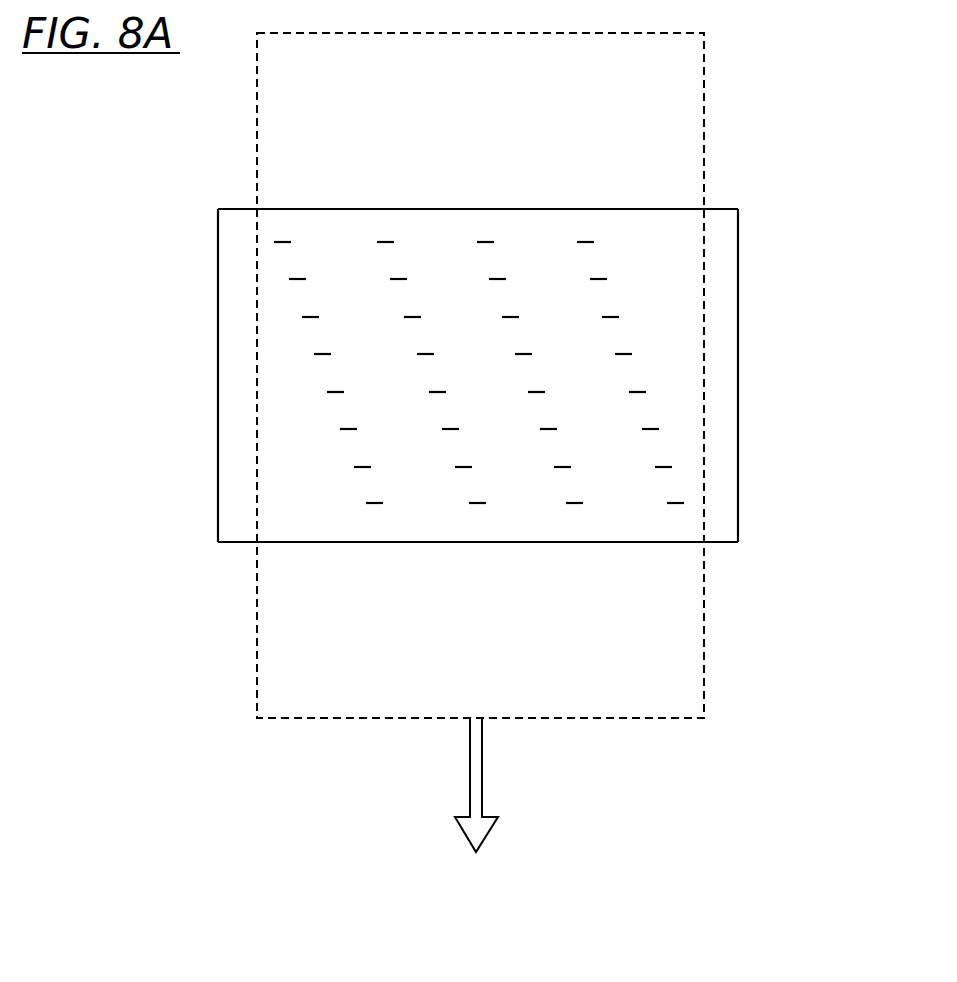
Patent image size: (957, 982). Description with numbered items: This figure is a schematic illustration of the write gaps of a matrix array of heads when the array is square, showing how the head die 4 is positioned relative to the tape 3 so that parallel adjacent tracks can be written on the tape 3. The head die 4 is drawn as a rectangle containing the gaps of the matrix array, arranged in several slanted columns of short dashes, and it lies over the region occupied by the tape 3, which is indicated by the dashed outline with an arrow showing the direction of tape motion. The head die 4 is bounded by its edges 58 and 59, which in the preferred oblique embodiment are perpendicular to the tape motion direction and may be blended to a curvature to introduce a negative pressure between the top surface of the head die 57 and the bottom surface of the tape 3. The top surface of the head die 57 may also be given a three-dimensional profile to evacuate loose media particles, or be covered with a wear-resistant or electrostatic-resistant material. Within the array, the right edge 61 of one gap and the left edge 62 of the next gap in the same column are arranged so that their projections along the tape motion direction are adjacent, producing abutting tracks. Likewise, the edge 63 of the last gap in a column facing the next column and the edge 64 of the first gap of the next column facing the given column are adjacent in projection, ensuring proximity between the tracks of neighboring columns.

The tape 3 is at (302, 652).
The head die 4 is at (277, 490).
The top surface of the head die 57 is at (718, 322).
The edge of the head die 58 is at (585, 209).
The edge of the head die 59 is at (520, 542).
The right edge of gap 61 is at (610, 282).
The left edge of gap 62 is at (617, 317).
The edge of last gap facing the next column 63 is at (587, 504).
The edge of first gap facing the given column 64 is at (565, 245).